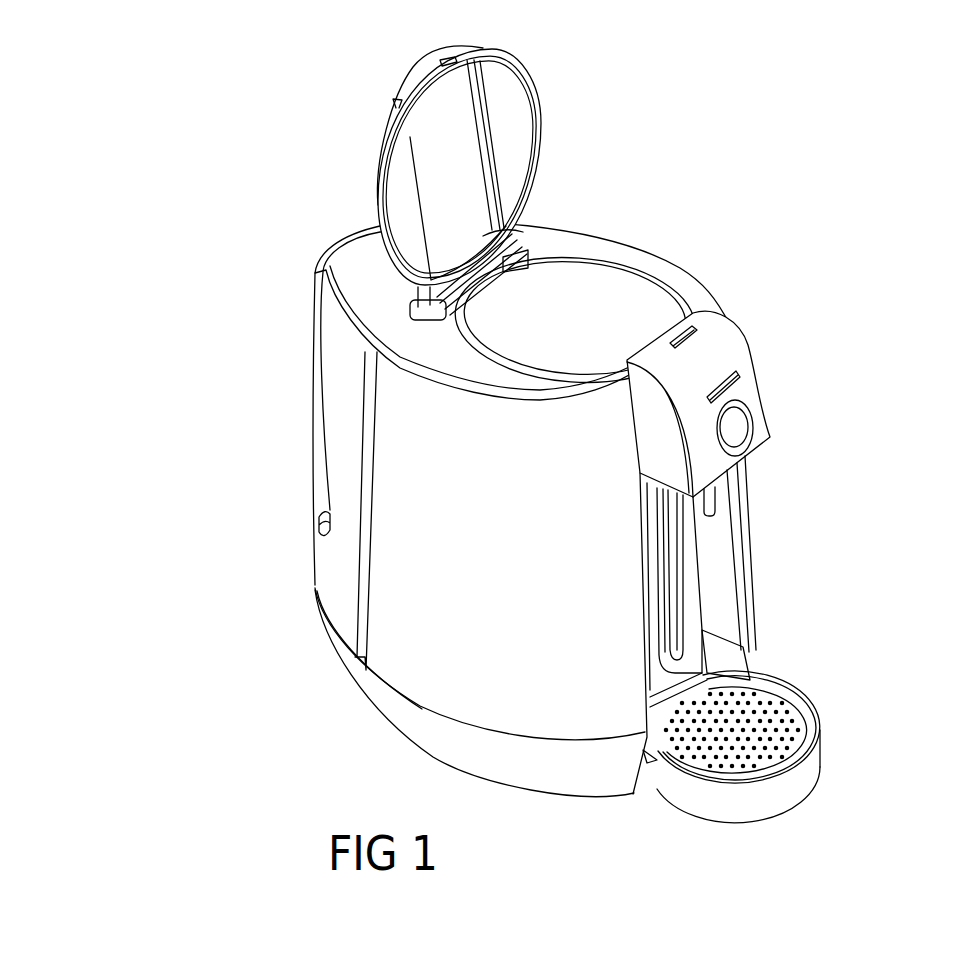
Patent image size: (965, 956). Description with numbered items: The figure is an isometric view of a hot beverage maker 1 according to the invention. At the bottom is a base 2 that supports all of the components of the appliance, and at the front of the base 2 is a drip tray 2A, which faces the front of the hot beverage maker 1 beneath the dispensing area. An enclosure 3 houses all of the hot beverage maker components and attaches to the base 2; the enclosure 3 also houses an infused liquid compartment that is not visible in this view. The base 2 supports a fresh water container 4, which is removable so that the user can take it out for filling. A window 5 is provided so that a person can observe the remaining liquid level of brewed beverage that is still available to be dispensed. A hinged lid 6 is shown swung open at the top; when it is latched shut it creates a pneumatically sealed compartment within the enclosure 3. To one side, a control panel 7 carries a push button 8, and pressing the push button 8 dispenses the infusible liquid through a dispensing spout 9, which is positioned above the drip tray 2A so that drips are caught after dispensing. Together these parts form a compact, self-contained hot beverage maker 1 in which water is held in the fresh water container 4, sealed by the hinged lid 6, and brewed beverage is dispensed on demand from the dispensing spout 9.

The hot beverage maker 1 is at (786, 176).
The base 2 is at (483, 758).
The drip tray 2A is at (823, 748).
The enclosure 3 is at (445, 587).
The fresh water container 4 is at (375, 283).
The window 5 is at (673, 611).
The hinged lid 6 is at (510, 133).
The control panel 7 is at (722, 356).
The push button 8 is at (738, 423).
The dispensing spout 9 is at (713, 503).